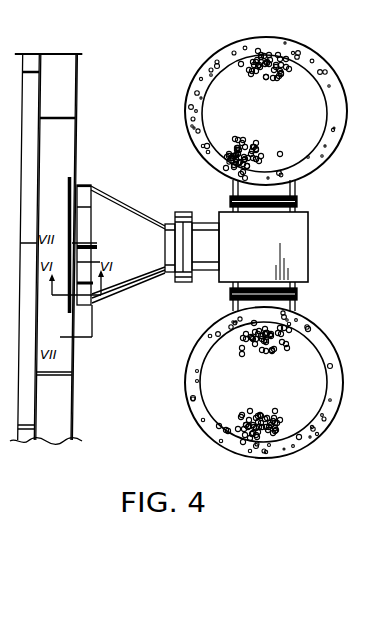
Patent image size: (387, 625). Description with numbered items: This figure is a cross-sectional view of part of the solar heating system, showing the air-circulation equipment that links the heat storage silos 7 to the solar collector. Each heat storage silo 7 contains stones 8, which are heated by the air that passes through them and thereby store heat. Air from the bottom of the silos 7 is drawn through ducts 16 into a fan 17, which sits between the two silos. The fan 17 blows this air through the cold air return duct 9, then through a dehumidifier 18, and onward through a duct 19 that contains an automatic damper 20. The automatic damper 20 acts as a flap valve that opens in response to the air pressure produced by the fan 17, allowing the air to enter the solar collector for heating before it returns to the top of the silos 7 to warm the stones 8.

The heat storage silo 7 is at (330, 88).
The stones 8 is at (312, 127).
The cold air return duct 9 is at (203, 233).
The duct 16 is at (299, 193).
The fan 17 is at (263, 247).
The dehumidifier 18 is at (190, 283).
The duct 19 is at (117, 284).
The automatic damper 20 is at (104, 177).